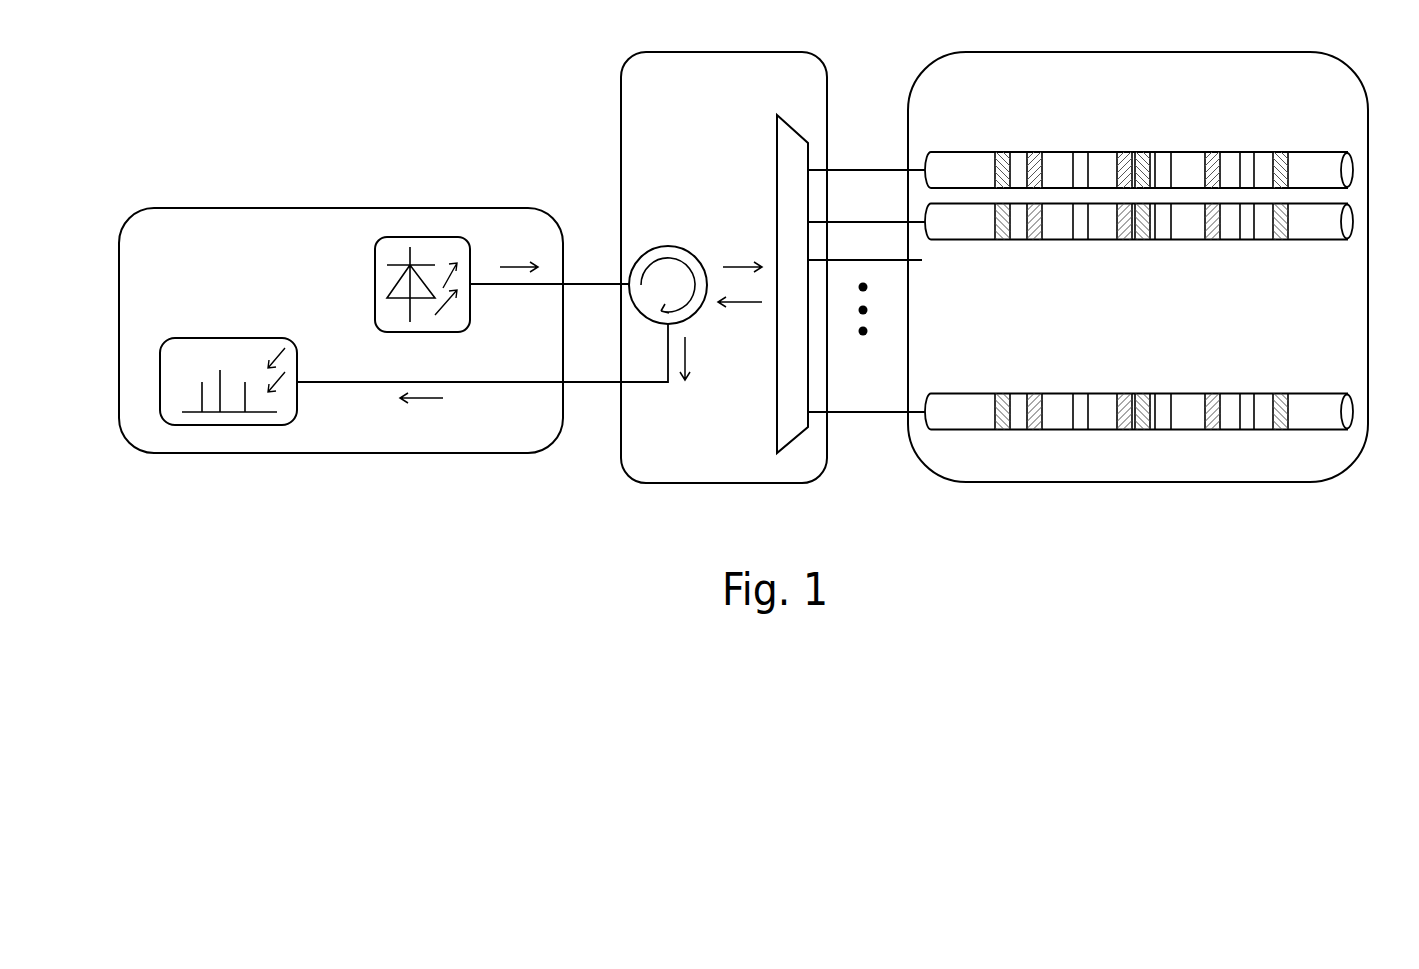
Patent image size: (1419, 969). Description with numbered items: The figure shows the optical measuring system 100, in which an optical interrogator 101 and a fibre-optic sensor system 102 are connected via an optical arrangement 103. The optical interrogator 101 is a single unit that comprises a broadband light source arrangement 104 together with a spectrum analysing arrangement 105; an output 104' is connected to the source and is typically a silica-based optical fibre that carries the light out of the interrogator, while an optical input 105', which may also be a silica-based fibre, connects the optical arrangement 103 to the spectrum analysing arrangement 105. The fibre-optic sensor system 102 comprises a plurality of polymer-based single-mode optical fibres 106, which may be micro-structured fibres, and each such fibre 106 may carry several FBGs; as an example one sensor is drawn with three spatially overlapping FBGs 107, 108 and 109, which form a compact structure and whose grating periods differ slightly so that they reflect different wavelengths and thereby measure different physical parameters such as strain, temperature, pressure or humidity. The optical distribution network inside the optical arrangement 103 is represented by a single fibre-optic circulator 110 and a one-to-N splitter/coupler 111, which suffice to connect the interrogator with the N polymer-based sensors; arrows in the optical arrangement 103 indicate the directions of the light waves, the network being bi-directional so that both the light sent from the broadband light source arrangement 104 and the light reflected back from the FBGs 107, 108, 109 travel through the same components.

The optical measuring system 100 is at (220, 176).
The optical interrogator 101 is at (178, 252).
The fibre-optic sensor system 102 is at (997, 91).
The optical arrangement 103 is at (682, 89).
The broadband light source arrangement 104 is at (421, 241).
The output 104' is at (524, 251).
The spectrum analysing arrangement 105 is at (283, 419).
The optical input 105' is at (426, 415).
The polymer-based single-mode optical fibre 106 is at (1335, 168).
The FBG 107 is at (1080, 232).
The FBG 108 is at (1037, 232).
The FBG 109 is at (1000, 167).
The fibre-optic circulator 110 is at (665, 268).
The 1-to-N splitter/coupler 111 is at (787, 422).